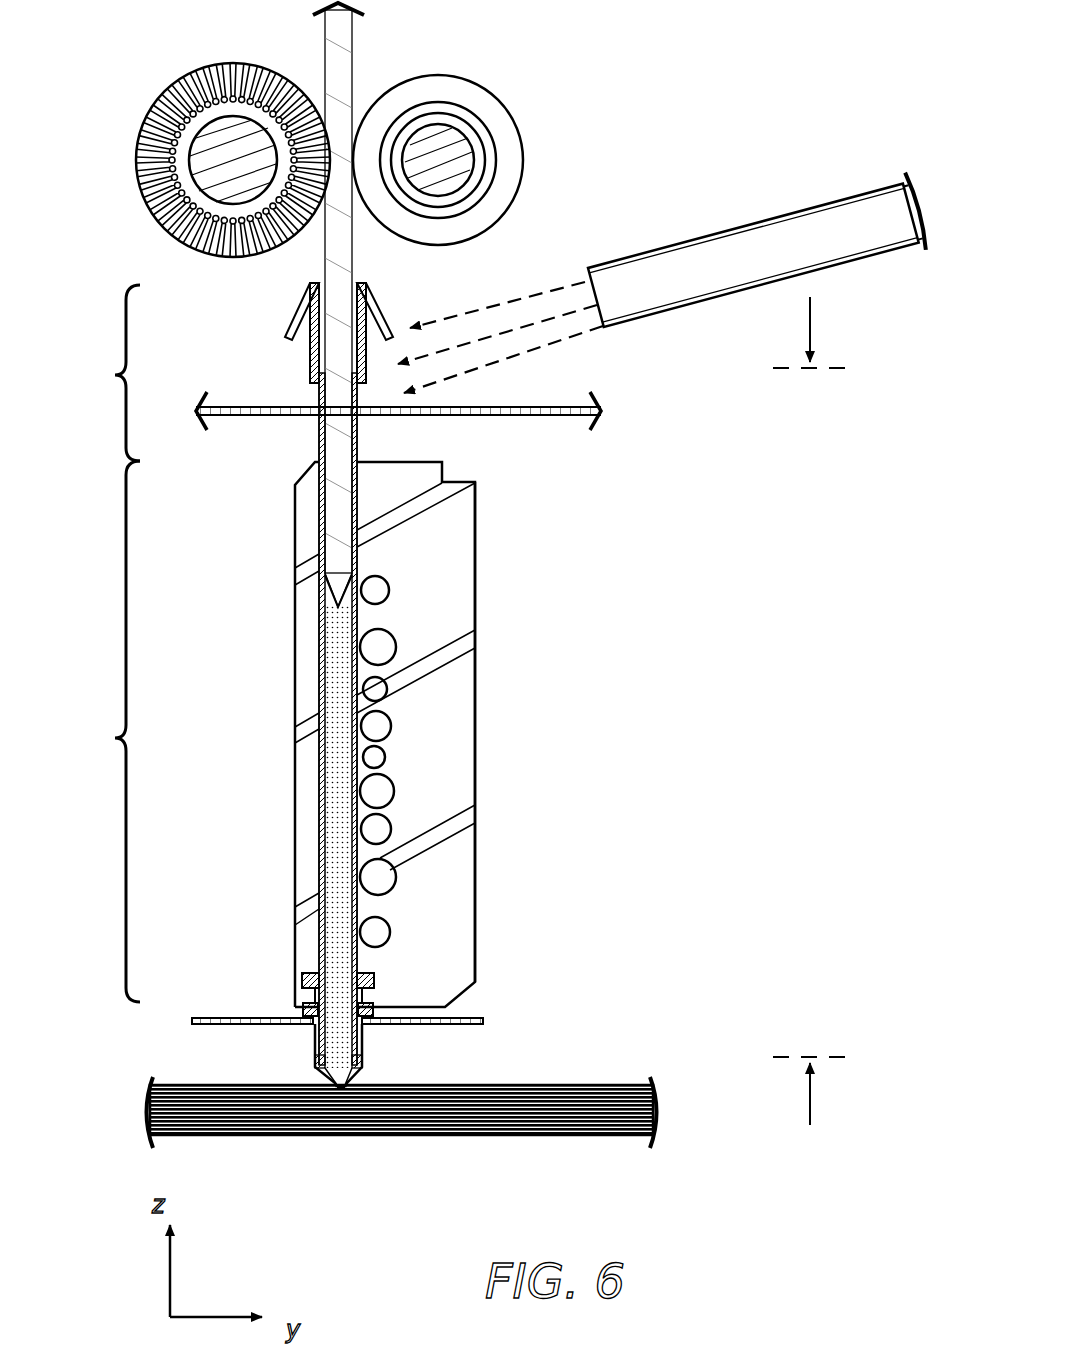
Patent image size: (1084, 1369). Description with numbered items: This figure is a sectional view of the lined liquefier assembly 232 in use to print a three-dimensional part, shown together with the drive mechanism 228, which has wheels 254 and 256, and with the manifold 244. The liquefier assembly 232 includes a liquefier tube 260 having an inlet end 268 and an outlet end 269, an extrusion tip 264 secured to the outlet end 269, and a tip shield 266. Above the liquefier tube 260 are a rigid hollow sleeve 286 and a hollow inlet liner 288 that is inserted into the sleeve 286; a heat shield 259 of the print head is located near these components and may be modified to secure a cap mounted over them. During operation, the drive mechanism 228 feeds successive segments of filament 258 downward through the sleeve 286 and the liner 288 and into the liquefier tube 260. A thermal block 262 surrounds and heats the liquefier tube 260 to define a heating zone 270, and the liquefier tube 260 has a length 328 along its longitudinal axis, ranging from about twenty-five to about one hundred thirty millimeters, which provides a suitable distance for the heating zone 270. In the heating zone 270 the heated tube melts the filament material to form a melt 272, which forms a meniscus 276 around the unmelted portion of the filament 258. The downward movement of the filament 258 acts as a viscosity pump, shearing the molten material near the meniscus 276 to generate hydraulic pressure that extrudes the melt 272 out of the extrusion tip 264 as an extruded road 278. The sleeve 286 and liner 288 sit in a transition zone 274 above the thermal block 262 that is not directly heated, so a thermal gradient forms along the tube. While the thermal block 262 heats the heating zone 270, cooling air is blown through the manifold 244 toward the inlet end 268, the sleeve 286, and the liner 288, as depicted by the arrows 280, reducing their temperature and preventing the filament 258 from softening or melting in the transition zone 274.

The drive mechanism 228 is at (558, 122).
The liquefier assembly 232 is at (590, 655).
The manifold 244 is at (777, 213).
The wheel 254 is at (134, 191).
The wheel 256 is at (515, 172).
The filament 258 is at (343, 68).
The heat shield 259 is at (560, 416).
The liquefier tube 260 is at (328, 690).
The thermal block 262 is at (463, 752).
The extrusion tip 264 is at (357, 1058).
The tip shield 266 is at (468, 1017).
The inlet end 268 is at (309, 393).
The outlet end 269 is at (308, 1052).
The heating zone 270 is at (100, 731).
The melt 272 is at (325, 810).
The transition zone 274 is at (101, 373).
The meniscus 276 is at (319, 598).
The extruded road 278 is at (172, 1085).
The arrows 280 is at (480, 362).
The sleeve 286 is at (309, 358).
The liner 288 is at (296, 310).
The length 328 is at (813, 315).